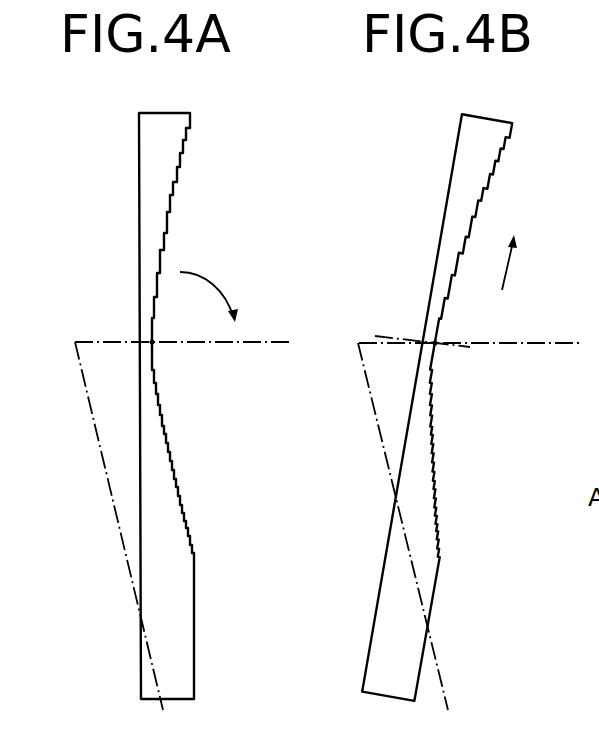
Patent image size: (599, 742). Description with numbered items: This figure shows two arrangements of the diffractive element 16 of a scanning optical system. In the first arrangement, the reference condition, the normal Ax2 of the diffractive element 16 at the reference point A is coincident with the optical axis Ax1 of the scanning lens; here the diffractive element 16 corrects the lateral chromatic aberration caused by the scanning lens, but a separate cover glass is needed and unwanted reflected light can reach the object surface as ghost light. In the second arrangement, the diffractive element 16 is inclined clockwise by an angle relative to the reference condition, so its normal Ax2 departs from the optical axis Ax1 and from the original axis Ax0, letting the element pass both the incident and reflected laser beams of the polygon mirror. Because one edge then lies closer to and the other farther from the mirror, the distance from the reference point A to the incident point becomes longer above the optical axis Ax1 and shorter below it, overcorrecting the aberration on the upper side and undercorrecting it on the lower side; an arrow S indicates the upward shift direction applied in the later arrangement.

In FIG. 4A, the diffractive element 16 is at (150, 238).
In FIG. 4B, the diffractive element 16 is at (456, 223).
In FIG. 4A, the reference point A is at (152, 342).
In FIG. 4B, the reference point A is at (435, 343).
In FIG. 4A, the original reference axis Ax0 is at (104, 490).
In FIG. 4B, the original reference axis Ax0 is at (387, 490).
In FIG. 4A, the optical axis Ax1 is at (270, 345).
In FIG. 4B, the optical axis Ax1 is at (553, 347).
In FIG. 4A, the normal Ax2 is at (200, 390).
In FIG. 4B, the normal Ax2 is at (480, 348).
In FIG. 4B, the distance S is at (519, 262).